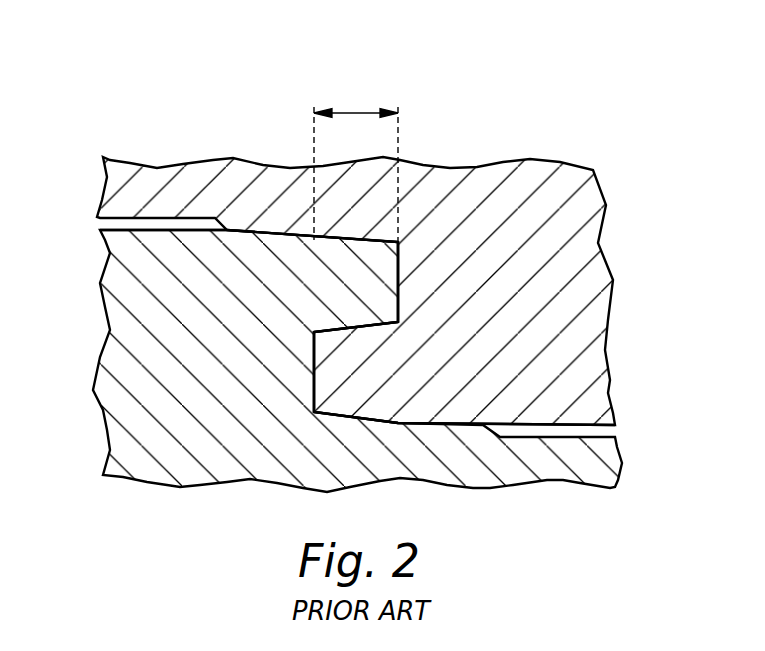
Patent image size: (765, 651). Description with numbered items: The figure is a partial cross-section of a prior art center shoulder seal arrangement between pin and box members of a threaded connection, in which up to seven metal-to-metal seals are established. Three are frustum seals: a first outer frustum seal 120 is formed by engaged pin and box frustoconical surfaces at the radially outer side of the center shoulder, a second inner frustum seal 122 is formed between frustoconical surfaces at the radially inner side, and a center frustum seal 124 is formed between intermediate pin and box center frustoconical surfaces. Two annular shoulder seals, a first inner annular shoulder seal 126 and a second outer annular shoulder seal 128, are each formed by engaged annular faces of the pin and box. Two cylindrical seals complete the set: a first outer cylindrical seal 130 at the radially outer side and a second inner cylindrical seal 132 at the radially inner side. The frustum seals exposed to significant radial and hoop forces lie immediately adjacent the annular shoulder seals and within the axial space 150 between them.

The first outer frustum seal 120 is at (355, 237).
The second inner frustum seal 122 is at (340, 416).
The center frustum seal 124 is at (370, 328).
The first inner annular shoulder seal 126 is at (314, 383).
The second outer annular shoulder seal 128 is at (398, 265).
The first outer cylindrical seal 130 is at (272, 230).
The second inner cylindrical seal 132 is at (440, 425).
The axial space 150 is at (357, 112).